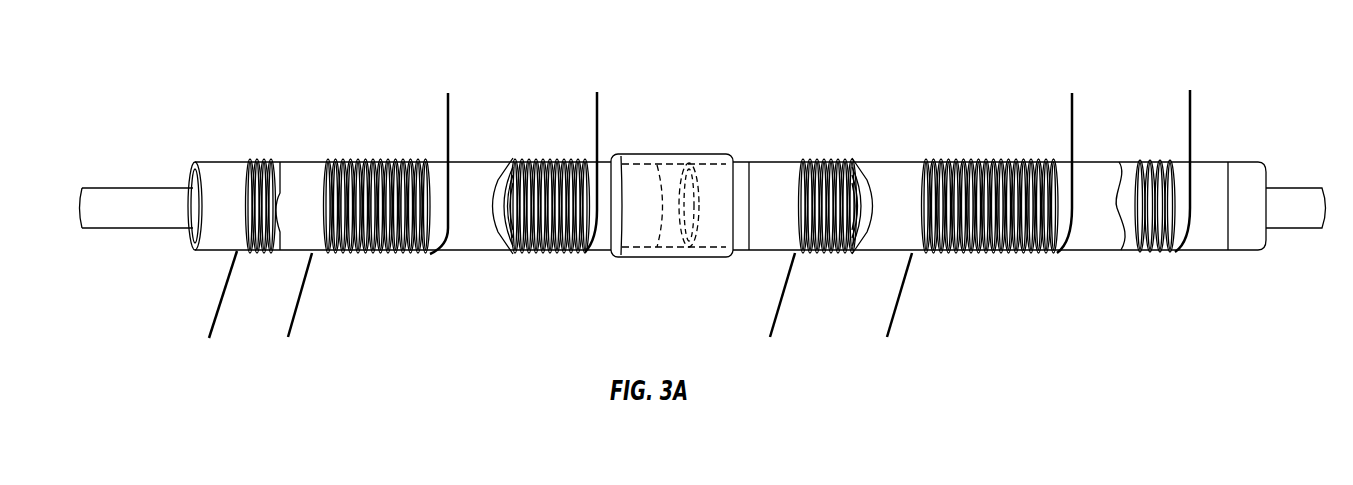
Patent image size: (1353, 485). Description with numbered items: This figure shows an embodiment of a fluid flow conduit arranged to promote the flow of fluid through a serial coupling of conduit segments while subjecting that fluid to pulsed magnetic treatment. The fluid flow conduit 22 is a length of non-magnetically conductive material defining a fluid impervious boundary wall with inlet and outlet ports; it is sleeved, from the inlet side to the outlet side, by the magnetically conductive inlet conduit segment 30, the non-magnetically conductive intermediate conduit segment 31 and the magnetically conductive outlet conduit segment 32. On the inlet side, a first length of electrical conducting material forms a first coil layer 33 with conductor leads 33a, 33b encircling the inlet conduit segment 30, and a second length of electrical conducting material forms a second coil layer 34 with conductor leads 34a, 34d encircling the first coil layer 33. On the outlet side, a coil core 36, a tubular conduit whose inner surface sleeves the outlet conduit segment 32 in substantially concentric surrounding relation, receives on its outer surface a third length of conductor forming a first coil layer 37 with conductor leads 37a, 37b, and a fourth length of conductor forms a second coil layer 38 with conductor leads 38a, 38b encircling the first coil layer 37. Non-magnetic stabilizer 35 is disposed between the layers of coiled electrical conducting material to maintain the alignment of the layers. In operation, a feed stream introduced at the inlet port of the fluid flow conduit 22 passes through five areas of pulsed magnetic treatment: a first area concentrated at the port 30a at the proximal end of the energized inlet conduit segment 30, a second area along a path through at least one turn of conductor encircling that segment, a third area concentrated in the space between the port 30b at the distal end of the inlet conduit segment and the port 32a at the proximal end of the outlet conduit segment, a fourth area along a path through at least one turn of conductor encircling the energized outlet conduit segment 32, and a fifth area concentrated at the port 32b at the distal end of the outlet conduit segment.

The fluid flow conduit 22 is at (127, 229).
The magnetically conductive inlet conduit segment 30 is at (235, 217).
The port at the proximal end of inlet conduit segment 30a is at (190, 167).
The port at the distal end of inlet conduit segment 30b is at (663, 213).
The non-magnetically conductive intermediate conduit segment 31 is at (677, 167).
The magnetically conductive outlet conduit segment 32 is at (1262, 217).
The port at the proximal end of outlet conduit segment 32a is at (694, 241).
The port at the distal end of outlet conduit segment 32b is at (1271, 167).
The first coil layer 33 is at (535, 161).
The conductor lead 33a is at (210, 336).
The conductor lead 33b is at (599, 101).
The second coil layer 34 is at (373, 160).
The conductor lead 34a is at (296, 318).
The second lead of second coil 34d is at (451, 101).
The non-magnetic stabilizer 35 is at (320, 217).
The coil core 36 is at (795, 217).
The first coil layer 37 is at (834, 160).
The conductor lead 37a is at (784, 313).
The conductor lead 37b is at (1193, 101).
The second coil layer 38 is at (992, 157).
The conductor lead 38a is at (898, 312).
The conductor lead 38b is at (1075, 102).